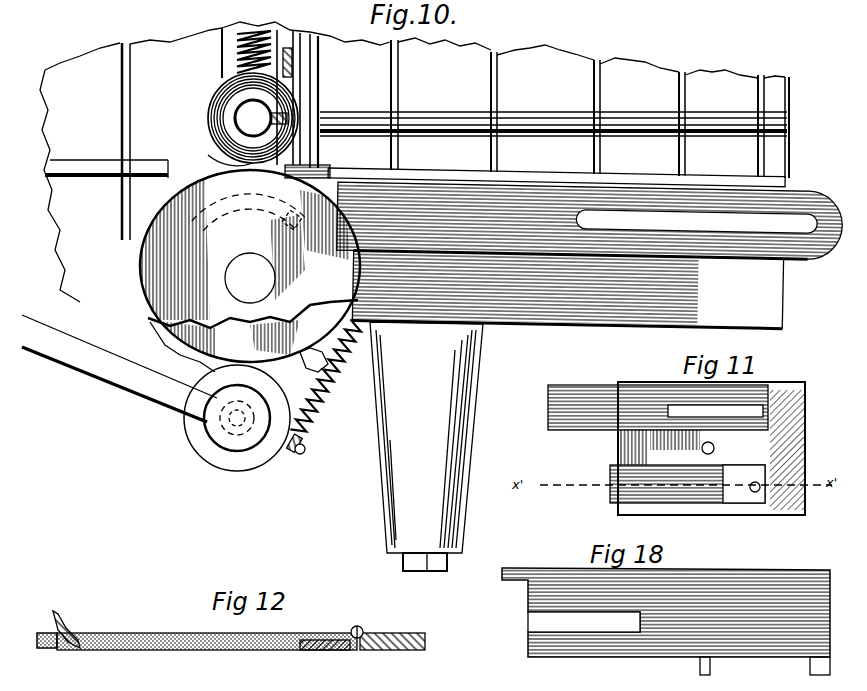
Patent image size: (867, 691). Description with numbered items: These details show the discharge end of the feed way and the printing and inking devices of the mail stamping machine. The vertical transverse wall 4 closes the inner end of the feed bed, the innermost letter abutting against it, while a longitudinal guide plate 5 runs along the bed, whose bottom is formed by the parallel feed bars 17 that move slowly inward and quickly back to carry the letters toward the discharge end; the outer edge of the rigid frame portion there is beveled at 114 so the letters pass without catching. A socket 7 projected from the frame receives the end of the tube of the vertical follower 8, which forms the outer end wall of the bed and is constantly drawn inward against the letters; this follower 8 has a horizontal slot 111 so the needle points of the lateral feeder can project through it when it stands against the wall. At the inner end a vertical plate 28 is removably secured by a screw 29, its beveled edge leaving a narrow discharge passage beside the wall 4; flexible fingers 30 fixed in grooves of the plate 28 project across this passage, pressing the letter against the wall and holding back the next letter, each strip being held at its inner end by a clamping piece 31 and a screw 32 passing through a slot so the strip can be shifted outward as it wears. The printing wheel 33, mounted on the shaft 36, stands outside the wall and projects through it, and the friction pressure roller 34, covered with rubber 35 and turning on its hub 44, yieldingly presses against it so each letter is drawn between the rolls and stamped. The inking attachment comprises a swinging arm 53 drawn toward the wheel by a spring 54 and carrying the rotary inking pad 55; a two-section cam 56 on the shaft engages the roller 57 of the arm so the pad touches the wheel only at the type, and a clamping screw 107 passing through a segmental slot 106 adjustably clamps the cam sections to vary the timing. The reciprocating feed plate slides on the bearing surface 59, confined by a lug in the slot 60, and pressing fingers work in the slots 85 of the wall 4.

In FIG. 10, the vertical transverse wall 4 is at (540, 172).
In FIG. 10, the longitudinal horizontal guide plate 5 is at (276, 58).
In FIG. 10, the socket 7 is at (426, 446).
In FIG. 18, the vertical follower 8 is at (666, 621).
In FIG. 10, the feed bars 17 is at (399, 90).
In FIG. 10, the vertical plate 28 is at (303, 118).
In FIG. 11, the vertical plate 28 is at (806, 447).
In FIG. 12, the vertical plate 28 is at (66, 628).
In FIG. 10, the screw 29 is at (292, 66).
In FIG. 10, the flexible fingers 30 is at (300, 158).
In FIG. 11, the flexible fingers 30 is at (658, 444).
In FIG. 12, the flexible fingers 30 is at (166, 651).
In FIG. 11, the clamping piece 31 is at (753, 472).
In FIG. 12, the clamping piece 31 is at (336, 652).
In FIG. 11, the screw 32 is at (755, 493).
In FIG. 12, the screw 32 is at (369, 626).
In FIG. 10, the printing wheel 33 is at (250, 271).
In FIG. 10, the friction pressure roller 34 is at (233, 127).
In FIG. 10, the rubber covering 35 is at (225, 152).
In FIG. 10, the shaft 36 is at (262, 278).
In FIG. 10, the shaft hub 44 is at (247, 118).
In FIG. 10, the swinging arm 53 is at (128, 390).
In FIG. 10, the spring 54 is at (322, 414).
In FIG. 10, the rotary inking pad 55 is at (246, 452).
In FIG. 10, the cam 56 is at (314, 345).
In FIG. 10, the roller 57 is at (212, 460).
In FIG. 10, the bearing surface 59 is at (590, 221).
In FIG. 10, the slot 60 is at (696, 222).
In FIG. 10, the slots 85 is at (121, 141).
In FIG. 10, the segmental slot 106 is at (256, 197).
In FIG. 10, the clamping screw 107 is at (284, 224).
In FIG. 18, the horizontal slot 111 is at (584, 622).
In FIG. 10, the beveled edge 114 is at (553, 124).